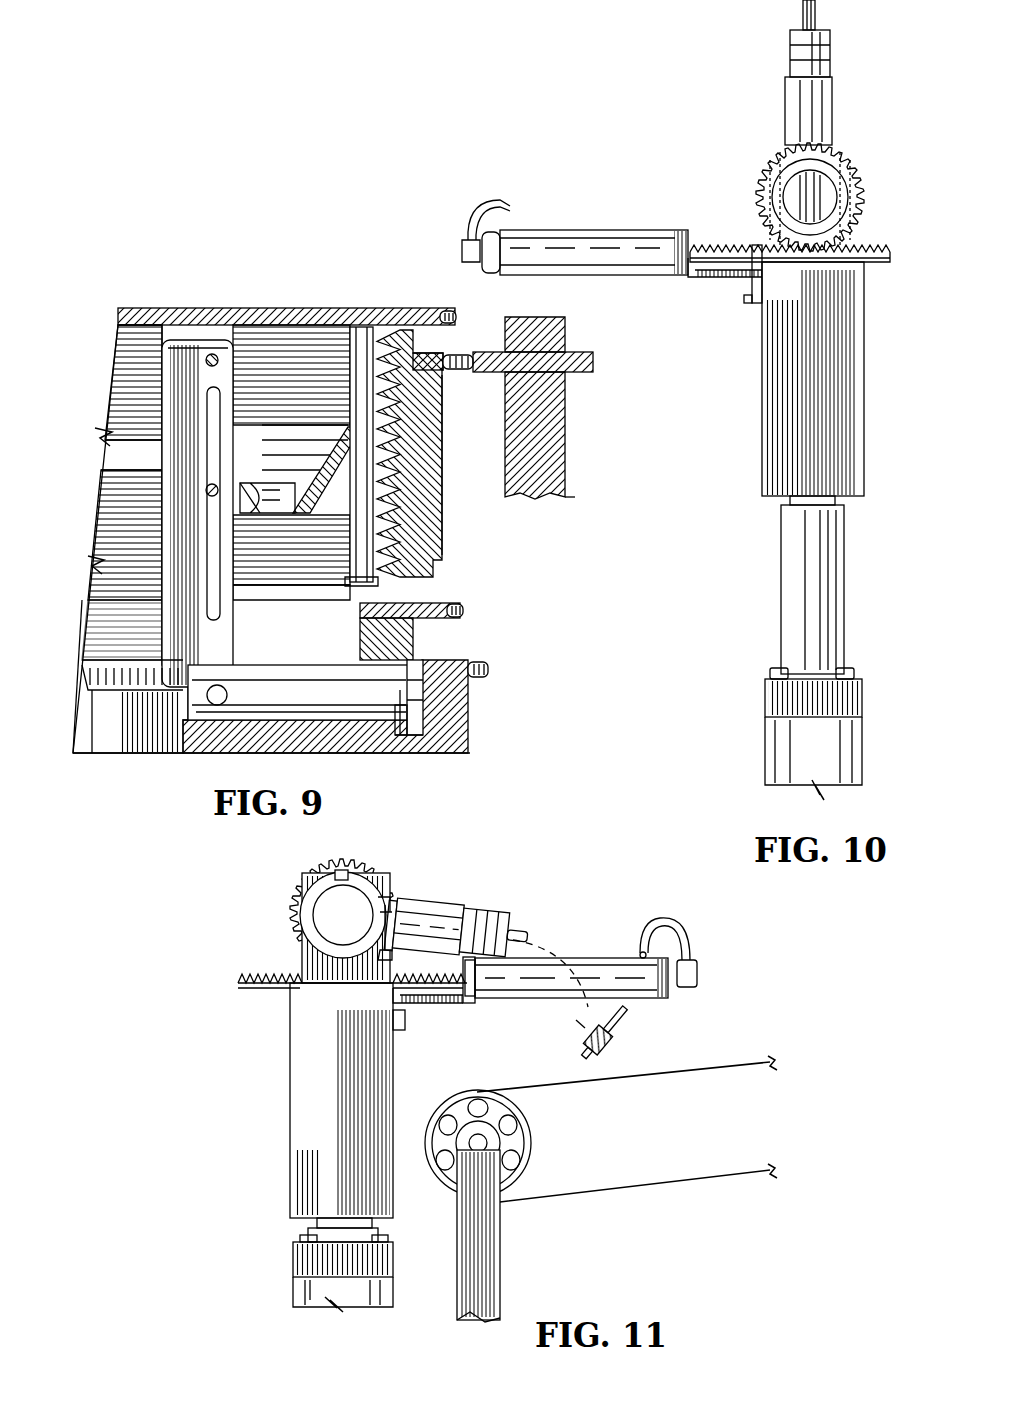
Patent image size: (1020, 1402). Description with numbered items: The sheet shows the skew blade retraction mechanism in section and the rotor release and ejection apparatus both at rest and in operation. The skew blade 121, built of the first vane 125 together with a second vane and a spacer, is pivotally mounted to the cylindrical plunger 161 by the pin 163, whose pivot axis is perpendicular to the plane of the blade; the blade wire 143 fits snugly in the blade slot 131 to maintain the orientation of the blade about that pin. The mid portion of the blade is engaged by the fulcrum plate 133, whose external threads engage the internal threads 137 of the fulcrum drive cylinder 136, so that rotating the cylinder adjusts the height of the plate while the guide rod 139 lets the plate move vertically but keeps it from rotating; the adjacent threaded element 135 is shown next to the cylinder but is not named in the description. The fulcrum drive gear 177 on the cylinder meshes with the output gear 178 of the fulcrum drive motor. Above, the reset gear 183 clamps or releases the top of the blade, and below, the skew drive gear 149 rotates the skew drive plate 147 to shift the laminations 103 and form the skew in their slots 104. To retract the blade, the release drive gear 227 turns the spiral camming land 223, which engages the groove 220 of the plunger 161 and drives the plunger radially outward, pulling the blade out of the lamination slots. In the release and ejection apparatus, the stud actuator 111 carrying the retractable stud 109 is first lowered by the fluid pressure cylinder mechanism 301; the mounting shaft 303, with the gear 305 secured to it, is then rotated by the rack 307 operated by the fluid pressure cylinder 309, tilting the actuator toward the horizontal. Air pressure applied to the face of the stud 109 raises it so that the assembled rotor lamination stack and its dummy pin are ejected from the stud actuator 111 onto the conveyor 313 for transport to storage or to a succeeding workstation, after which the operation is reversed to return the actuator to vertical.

In FIG. 9, the skew blade 121 is at (192, 340).
In FIG. 9, the reset gear 183 is at (297, 308).
In FIG. 9, the internal threads 137 is at (128, 352).
In FIG. 9, the fulcrum plate 133 is at (146, 469).
In FIG. 9, the blade wire 143 is at (206, 490).
In FIG. 9, the blade slot 131 is at (207, 607).
In FIG. 9, the guide rod 139 is at (378, 447).
In FIG. 9, the threaded column 135 is at (397, 470).
In FIG. 9, the fulcrum drive cylinder 136 is at (443, 547).
In FIG. 9, the fulcrum drive gear 177 is at (443, 360).
In FIG. 9, the output gear 178 is at (563, 352).
In FIG. 9, the release drive gear 227 is at (450, 603).
In FIG. 9, the first vane 125 is at (415, 640).
In FIG. 9, the skew drive gear 149 is at (487, 668).
In FIG. 9, the spiral camming land 223 is at (82, 670).
In FIG. 9, the groove 220 is at (397, 707).
In FIG. 9, the plunger 161 is at (334, 694).
In FIG. 9, the pin 163 is at (227, 694).
In FIG. 9, the skew drive plate 147 is at (72, 732).
In FIG. 10, the mounting shaft 303 is at (828, 183).
In FIG. 10, the gear 305 is at (863, 187).
In FIG. 11, the gear 305 is at (333, 856).
In FIG. 10, the rack 307 is at (718, 248).
In FIG. 11, the rack 307 is at (257, 968).
In FIG. 10, the fluid pressure cylinder 309 is at (552, 230).
In FIG. 11, the fluid pressure cylinder 309 is at (633, 918).
In FIG. 10, the fluid pressure cylinder mechanism 301 is at (845, 585).
In FIG. 11, the fluid pressure cylinder mechanism 301 is at (313, 1222).
In FIG. 11, the stud actuator 111 is at (433, 895).
In FIG. 11, the retractable stud 109 is at (513, 940).
In FIG. 11, the laminations 103 is at (577, 1048).
In FIG. 11, the slots 104 is at (640, 1053).
In FIG. 11, the conveyor 313 is at (667, 1073).